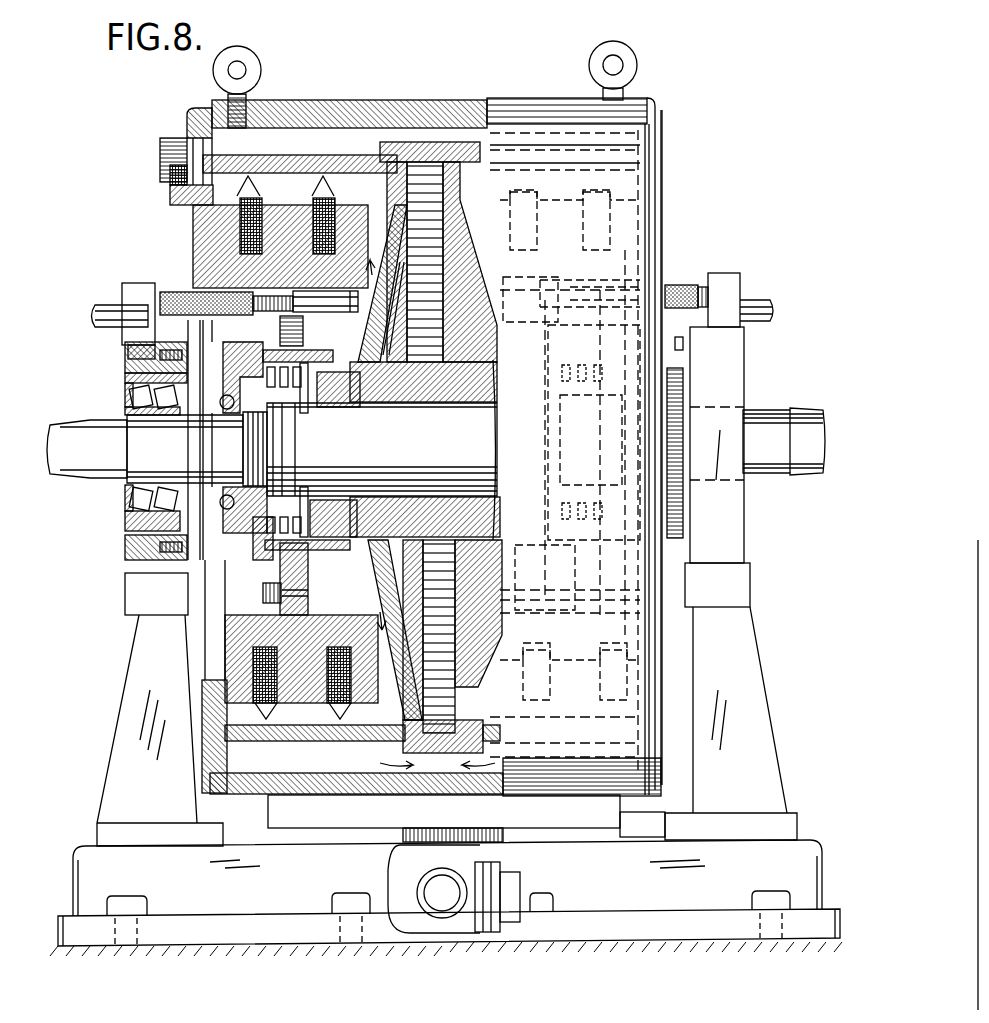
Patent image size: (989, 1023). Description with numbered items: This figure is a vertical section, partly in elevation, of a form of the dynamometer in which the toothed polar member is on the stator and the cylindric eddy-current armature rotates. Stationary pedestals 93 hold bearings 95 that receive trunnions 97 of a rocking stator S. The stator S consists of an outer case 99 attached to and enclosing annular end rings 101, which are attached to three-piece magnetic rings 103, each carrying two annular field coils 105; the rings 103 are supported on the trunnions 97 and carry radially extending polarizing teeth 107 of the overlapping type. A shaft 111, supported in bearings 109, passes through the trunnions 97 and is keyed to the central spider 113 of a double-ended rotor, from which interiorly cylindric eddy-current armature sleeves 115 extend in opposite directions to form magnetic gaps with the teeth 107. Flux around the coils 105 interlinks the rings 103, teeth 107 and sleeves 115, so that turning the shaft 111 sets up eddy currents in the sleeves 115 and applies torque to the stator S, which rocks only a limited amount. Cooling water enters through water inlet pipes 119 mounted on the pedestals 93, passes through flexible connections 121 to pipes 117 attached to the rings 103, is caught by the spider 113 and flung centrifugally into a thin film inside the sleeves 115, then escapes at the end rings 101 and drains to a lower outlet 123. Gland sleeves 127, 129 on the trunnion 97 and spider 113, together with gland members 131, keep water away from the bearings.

The pedestal 93 is at (128, 688).
The bearing 95 is at (137, 401).
The trunnion 97 is at (183, 385).
The outer case 99 is at (379, 104).
The annular end ring 101 is at (187, 207).
The three-piece magnetic ring 103 is at (320, 263).
The annular field coil 105 is at (318, 233).
The polarizing tooth 107 is at (300, 183).
The bearing 109 is at (233, 485).
The shaft 111 is at (464, 456).
The central spider 113 is at (412, 377).
The eddy-current armature sleeve 115 is at (342, 145).
The pipe 117 is at (313, 308).
The water inlet pipe 119 is at (112, 320).
The flexible connection 121 is at (185, 302).
The lower outlet 123 is at (405, 846).
The gland sleeve 127 is at (312, 398).
The gland sleeve 129 is at (320, 358).
The gland member 131 is at (295, 405).
The rocking stator S is at (412, 100).